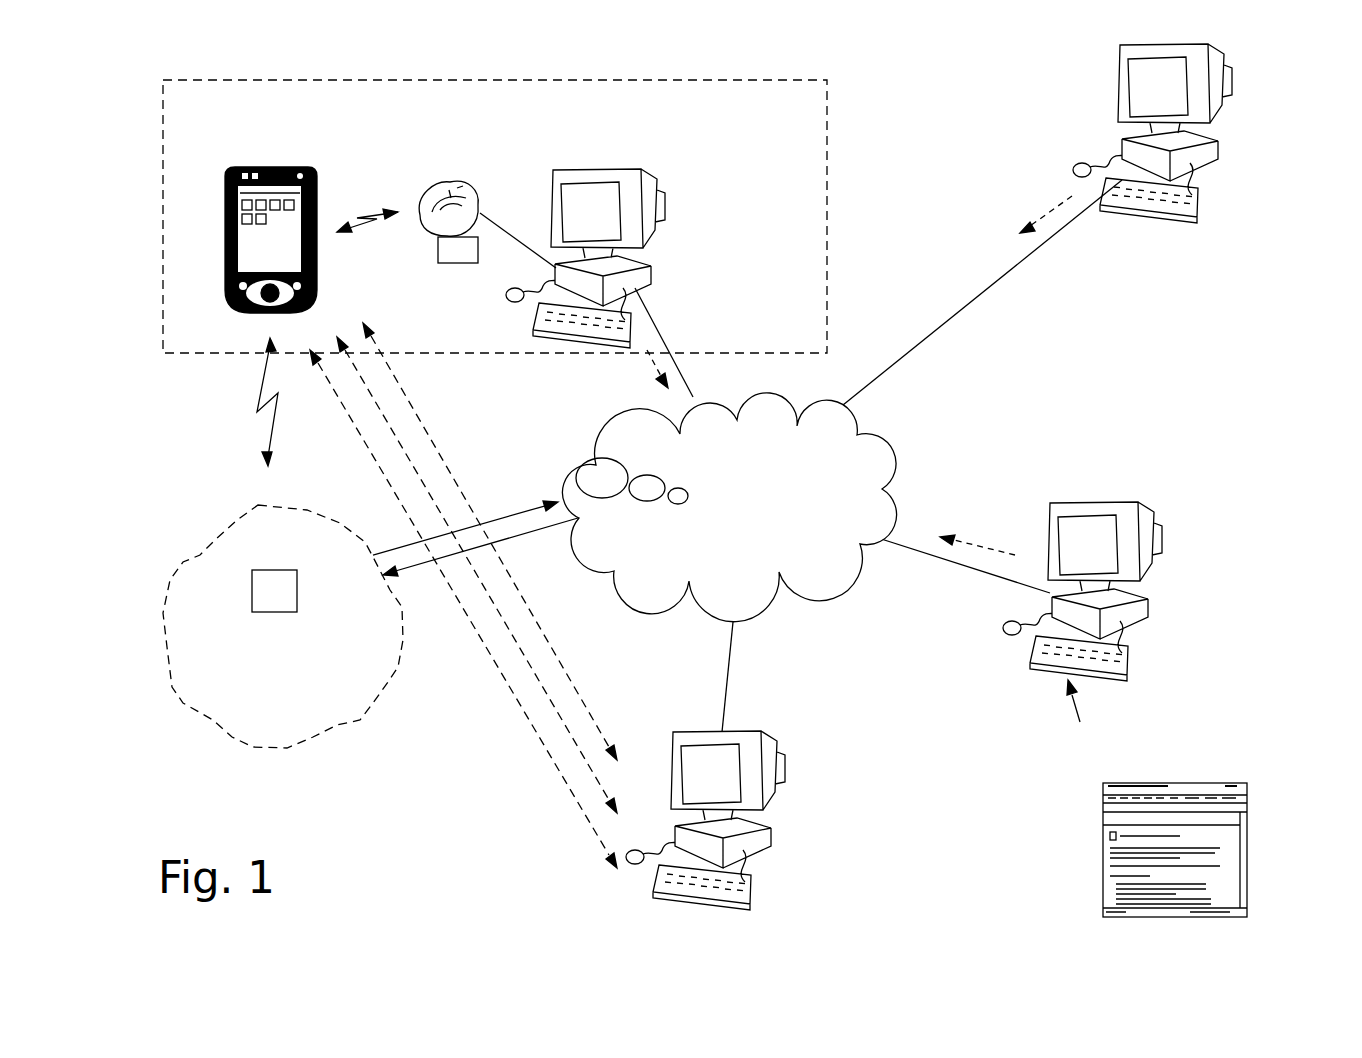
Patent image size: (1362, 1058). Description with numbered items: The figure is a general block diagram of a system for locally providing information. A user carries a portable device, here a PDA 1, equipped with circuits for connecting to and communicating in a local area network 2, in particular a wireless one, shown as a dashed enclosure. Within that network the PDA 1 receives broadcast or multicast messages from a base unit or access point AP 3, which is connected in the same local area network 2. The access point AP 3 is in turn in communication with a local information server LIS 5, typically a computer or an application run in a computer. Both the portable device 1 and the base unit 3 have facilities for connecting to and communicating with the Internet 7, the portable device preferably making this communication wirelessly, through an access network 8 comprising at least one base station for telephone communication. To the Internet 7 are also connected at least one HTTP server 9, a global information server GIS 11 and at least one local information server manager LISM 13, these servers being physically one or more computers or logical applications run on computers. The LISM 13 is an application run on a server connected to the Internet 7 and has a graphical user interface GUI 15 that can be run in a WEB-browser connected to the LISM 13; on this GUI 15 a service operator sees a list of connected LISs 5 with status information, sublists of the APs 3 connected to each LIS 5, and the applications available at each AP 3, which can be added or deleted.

The PDA 1 is at (226, 215).
The local area network 2 is at (826, 256).
The access point AP 3 is at (430, 205).
The local information server LIS 5 is at (608, 176).
The Internet 7 is at (825, 590).
The access network 8 is at (377, 687).
The HTTP server 9 is at (785, 783).
The global information server GIS 11 is at (1120, 80).
The local information server manager LISM 13 is at (1140, 507).
The graphical user interface GUI 15 is at (1247, 850).